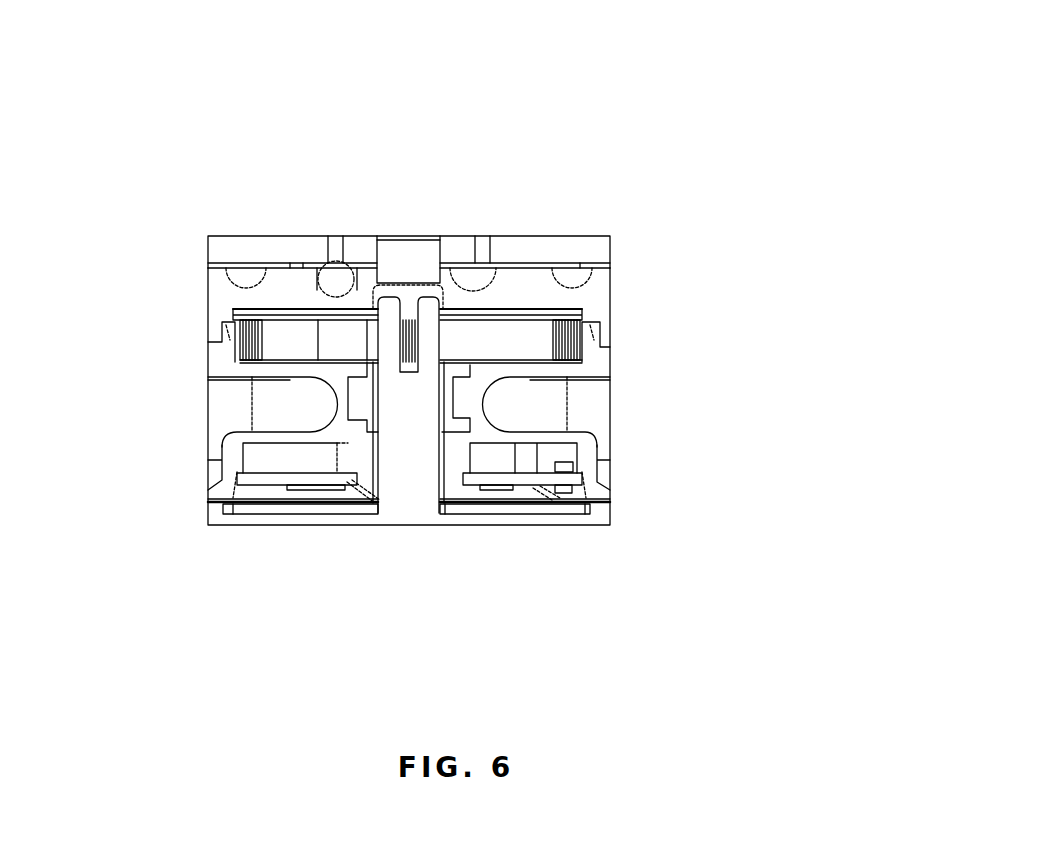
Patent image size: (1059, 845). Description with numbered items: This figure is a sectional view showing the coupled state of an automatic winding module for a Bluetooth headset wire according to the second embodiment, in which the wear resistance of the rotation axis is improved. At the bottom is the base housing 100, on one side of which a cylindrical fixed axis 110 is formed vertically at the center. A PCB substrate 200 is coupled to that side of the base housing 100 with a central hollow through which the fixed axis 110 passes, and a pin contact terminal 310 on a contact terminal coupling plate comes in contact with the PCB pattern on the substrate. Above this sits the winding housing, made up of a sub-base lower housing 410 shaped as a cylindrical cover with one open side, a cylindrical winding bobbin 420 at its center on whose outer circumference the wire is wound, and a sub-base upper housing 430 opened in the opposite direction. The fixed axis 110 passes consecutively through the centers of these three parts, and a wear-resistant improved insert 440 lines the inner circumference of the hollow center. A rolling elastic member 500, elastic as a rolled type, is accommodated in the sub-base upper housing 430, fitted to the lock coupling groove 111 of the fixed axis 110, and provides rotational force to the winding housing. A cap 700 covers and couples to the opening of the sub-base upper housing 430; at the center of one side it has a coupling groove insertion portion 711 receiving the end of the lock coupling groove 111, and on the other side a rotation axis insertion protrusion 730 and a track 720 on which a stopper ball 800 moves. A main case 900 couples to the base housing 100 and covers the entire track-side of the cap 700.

The base housing 100 is at (409, 458).
The fixed axis 110 is at (385, 561).
The lock coupling groove 111 is at (408, 289).
The PCB substrate 200 is at (487, 524).
The pin contact terminal 310 is at (503, 497).
The sub-base lower housing 410 is at (323, 473).
The winding bobbin 420 is at (348, 398).
The sub-base upper housing 430 is at (335, 348).
The wear-resistant improved insert 440 is at (450, 396).
The rolling elastic member 500 is at (540, 330).
The cap 700 is at (521, 172).
The coupling groove insertion portion 711 is at (437, 201).
The track 720 is at (200, 199).
The rotation axis insertion protrusion 730 is at (371, 177).
The stopper ball 800 is at (292, 188).
The main case 900 is at (437, 138).